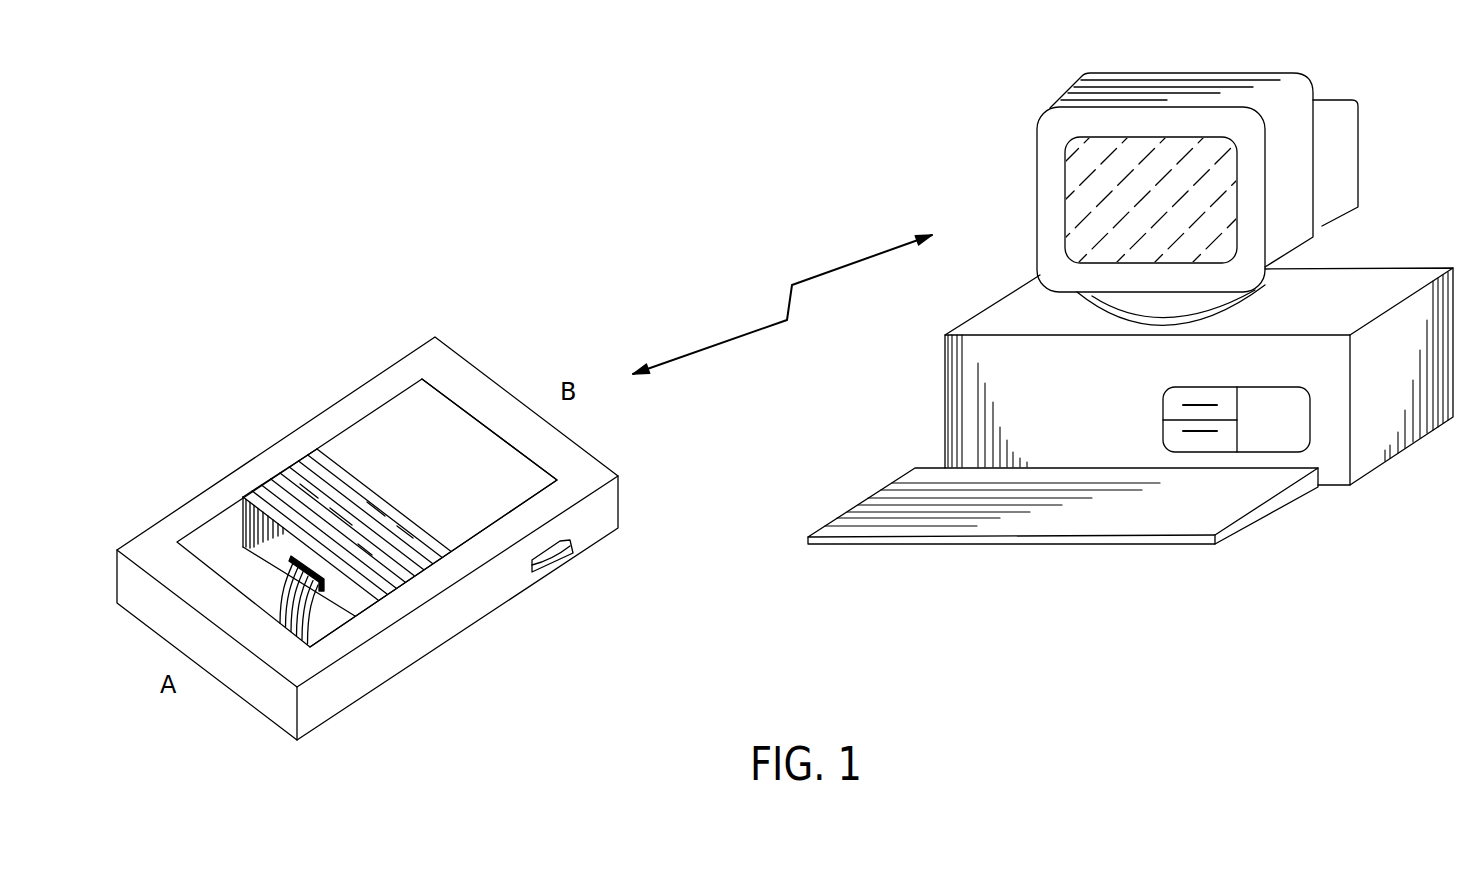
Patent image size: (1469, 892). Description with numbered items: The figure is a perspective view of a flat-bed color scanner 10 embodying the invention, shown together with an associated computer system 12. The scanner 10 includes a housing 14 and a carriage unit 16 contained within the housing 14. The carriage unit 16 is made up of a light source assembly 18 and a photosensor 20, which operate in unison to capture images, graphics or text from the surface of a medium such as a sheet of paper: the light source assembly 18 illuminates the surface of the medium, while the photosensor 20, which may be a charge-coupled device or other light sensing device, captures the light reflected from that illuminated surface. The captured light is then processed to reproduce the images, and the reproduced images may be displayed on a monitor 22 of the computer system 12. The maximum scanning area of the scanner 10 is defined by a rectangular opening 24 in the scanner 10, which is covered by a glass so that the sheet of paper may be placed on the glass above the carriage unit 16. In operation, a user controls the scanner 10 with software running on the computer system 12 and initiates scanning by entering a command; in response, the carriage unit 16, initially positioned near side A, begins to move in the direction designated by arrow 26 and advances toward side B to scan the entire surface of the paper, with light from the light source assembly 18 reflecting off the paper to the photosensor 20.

The flat-bed color scanner 10 is at (408, 290).
The computer system 12 is at (991, 113).
The housing 14 is at (344, 408).
The carriage unit 16 is at (379, 487).
The light source assembly 18 is at (390, 574).
The photosensor 20 is at (438, 565).
The monitor 22 is at (1360, 158).
The rectangular opening 24 is at (455, 432).
The arrow 26 is at (463, 516).